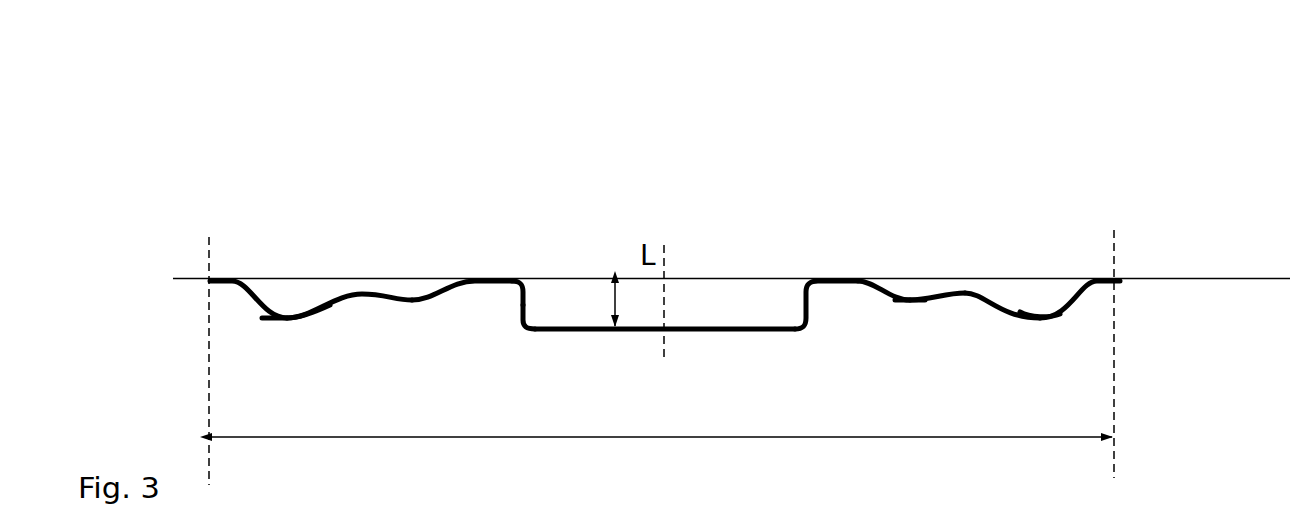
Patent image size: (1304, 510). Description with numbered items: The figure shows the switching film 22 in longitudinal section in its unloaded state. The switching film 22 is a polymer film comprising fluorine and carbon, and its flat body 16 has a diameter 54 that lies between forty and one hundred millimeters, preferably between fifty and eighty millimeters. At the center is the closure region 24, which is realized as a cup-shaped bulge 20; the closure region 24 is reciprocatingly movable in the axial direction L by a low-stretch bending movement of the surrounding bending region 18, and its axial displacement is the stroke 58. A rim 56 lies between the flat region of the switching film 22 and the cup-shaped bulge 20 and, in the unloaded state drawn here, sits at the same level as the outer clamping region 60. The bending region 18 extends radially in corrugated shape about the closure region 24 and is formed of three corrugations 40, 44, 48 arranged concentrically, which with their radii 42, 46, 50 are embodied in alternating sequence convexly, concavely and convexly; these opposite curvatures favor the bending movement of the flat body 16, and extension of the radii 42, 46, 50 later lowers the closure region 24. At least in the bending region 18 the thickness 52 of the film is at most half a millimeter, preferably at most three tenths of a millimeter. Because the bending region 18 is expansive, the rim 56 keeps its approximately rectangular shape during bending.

The flat body 16 is at (446, 260).
The bending region 18 is at (378, 291).
The cup-shaped bulge 20 is at (519, 315).
The switching film 22 is at (496, 146).
The closure region 24 is at (763, 328).
The corrugation 40 is at (1057, 318).
The radius 42 is at (1069, 301).
The corrugation 44 is at (978, 292).
The radius 46 is at (986, 301).
The corrugation 48 is at (902, 301).
The radius 50 is at (906, 296).
The thickness 52 is at (338, 305).
The diameter 54 is at (790, 436).
The rim 56 is at (524, 278).
The stroke 58 is at (610, 312).
The outer clamping region 60 is at (223, 281).